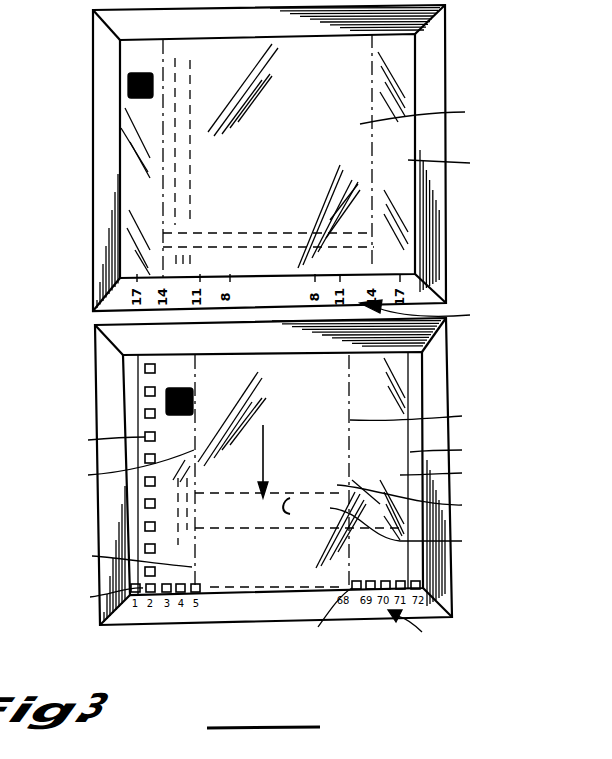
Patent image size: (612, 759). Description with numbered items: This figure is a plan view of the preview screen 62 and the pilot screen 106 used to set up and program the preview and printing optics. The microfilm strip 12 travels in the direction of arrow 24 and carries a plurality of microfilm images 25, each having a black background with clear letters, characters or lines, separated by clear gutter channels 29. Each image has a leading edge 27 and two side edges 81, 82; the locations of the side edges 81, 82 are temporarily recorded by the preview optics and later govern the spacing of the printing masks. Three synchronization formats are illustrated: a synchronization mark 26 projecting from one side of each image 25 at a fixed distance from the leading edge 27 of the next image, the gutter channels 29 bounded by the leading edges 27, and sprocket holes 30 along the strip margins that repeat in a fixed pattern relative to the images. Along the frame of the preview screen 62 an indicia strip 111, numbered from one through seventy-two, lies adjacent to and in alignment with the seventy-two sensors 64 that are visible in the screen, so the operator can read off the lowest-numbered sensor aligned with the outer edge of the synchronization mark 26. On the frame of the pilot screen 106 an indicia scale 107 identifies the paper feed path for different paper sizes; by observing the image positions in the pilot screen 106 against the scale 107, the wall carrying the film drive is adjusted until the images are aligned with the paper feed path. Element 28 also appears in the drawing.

The synchronization mark 26 is at (128, 88).
The microfilm image 25 is at (416, 308).
The pilot screen 106 is at (459, 164).
The indicia scale 107 is at (437, 312).
The side edge of microfilm image 81 is at (422, 416).
The preview screen 62 is at (452, 450).
The microfilm strip 12 is at (447, 473).
The gutter channel 29 is at (412, 529).
The arrow 24 is at (265, 462).
The leading edge 27 is at (300, 508).
The sprocket holes 30 is at (101, 440).
The side edge of microfilm image 82 is at (126, 468).
The guide line 28 is at (127, 555).
The sensors 64 is at (205, 615).
The indicia strip 111 is at (425, 626).